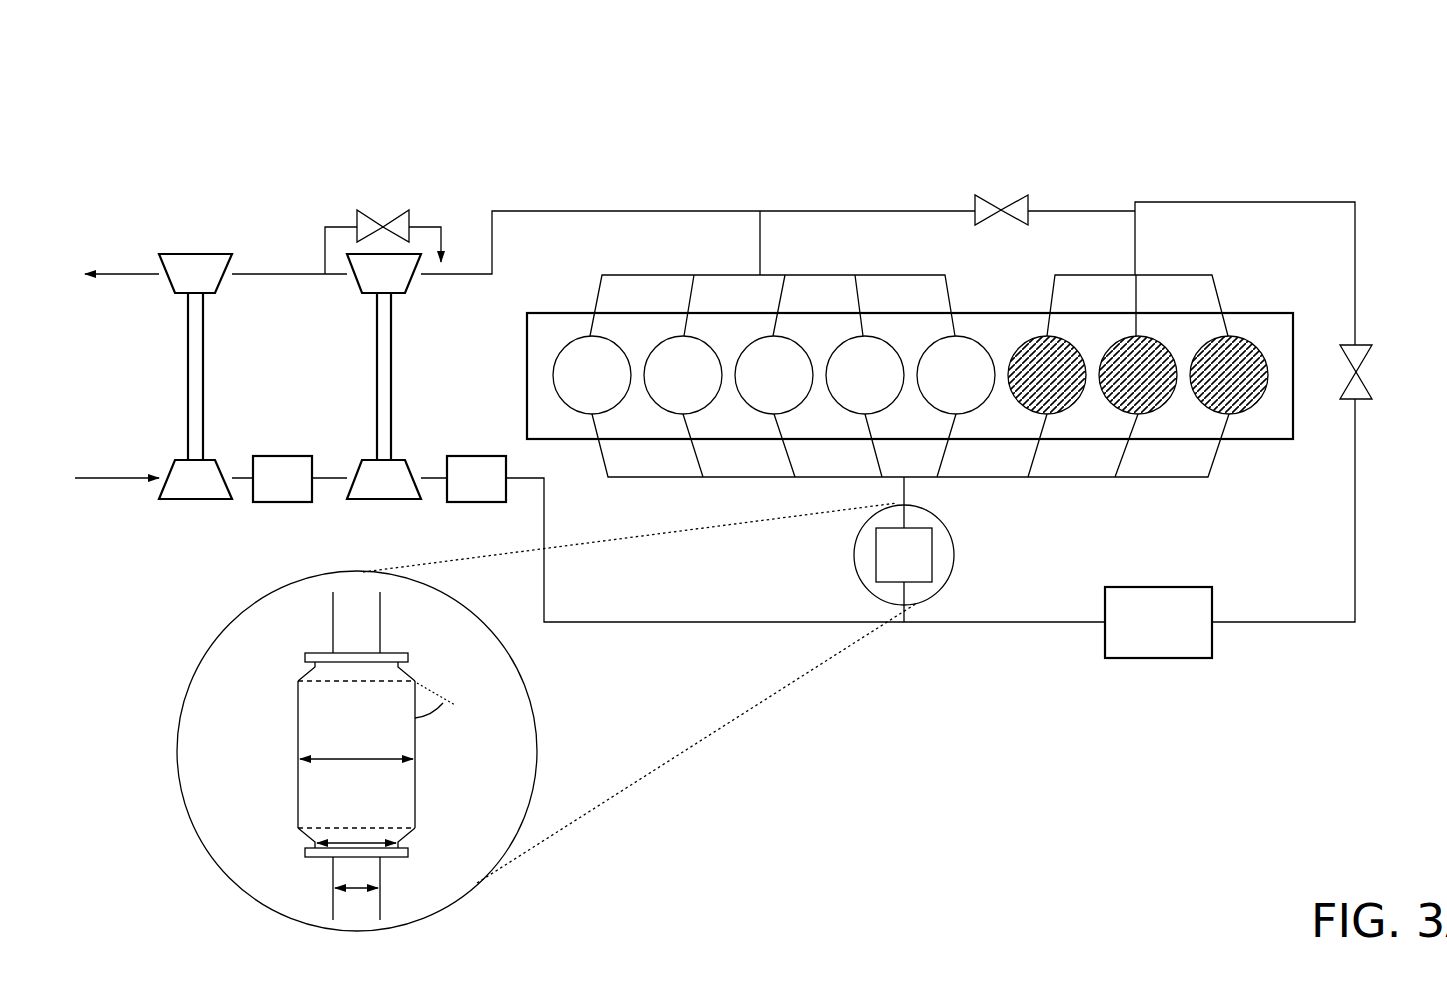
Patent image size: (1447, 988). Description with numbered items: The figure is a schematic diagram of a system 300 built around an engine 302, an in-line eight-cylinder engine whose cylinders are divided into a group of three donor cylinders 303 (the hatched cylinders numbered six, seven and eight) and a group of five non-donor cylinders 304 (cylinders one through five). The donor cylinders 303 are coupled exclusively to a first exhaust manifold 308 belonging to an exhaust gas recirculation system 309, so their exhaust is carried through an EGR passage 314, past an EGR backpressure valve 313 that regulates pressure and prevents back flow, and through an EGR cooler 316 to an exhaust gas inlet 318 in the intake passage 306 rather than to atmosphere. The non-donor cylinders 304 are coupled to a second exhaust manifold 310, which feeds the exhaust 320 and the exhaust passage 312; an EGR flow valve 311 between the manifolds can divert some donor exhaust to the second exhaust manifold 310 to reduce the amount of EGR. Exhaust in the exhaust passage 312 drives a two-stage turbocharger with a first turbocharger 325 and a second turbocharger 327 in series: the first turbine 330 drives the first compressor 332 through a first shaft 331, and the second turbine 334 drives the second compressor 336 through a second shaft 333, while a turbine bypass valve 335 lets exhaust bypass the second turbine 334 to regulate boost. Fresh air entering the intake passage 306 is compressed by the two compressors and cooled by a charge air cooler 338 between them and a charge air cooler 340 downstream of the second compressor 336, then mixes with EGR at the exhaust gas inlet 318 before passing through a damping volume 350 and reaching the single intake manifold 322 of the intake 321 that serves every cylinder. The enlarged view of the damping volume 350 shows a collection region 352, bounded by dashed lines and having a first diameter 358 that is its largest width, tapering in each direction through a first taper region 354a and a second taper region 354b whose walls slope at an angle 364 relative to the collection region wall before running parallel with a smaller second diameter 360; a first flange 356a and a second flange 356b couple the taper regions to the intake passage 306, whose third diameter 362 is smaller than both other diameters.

The system 300 is at (1233, 100).
The engine 302 is at (922, 327).
The donor cylinders 303 is at (1178, 250).
The non-donor cylinders 304 is at (870, 260).
The intake passage 306 is at (624, 620).
The first exhaust manifold 308 is at (1110, 275).
The exhaust gas recirculation (EGR) system 309 is at (1269, 399).
The second exhaust manifold 310 is at (730, 274).
The EGR flow valve 311 is at (1015, 200).
The exhaust passage 312 is at (570, 210).
The EGR backpressure valve 313 is at (1362, 385).
The EGR passage 314 is at (1355, 530).
The EGR cooler 316 is at (1158, 622).
The exhaust gas inlet 318 is at (907, 630).
The exhaust 320 is at (778, 209).
The intake 321 is at (689, 698).
The intake manifold 322 is at (661, 480).
The first turbocharger 325 is at (239, 376).
The second turbocharger 327 is at (428, 376).
The first turbine 330 is at (195, 273).
The first shaft 331 is at (203, 390).
The first compressor 332 is at (195, 479).
The second shaft 333 is at (391, 390).
The second turbine 334 is at (384, 273).
The turbine bypass valve 335 is at (405, 222).
The second compressor 336 is at (384, 479).
The charge air cooler 338 is at (282, 479).
The charge air cooler 340 is at (476, 479).
The damping volume 350 is at (397, 640).
The collection region 352 is at (308, 730).
The first taper region 354a is at (325, 675).
The second taper region 354b is at (320, 843).
The first flange 356a is at (400, 660).
The second flange 356b is at (400, 855).
The first diameter 358 is at (390, 758).
The second diameter 360 is at (375, 840).
The third diameter 362 is at (360, 888).
The angle 364 is at (443, 710).